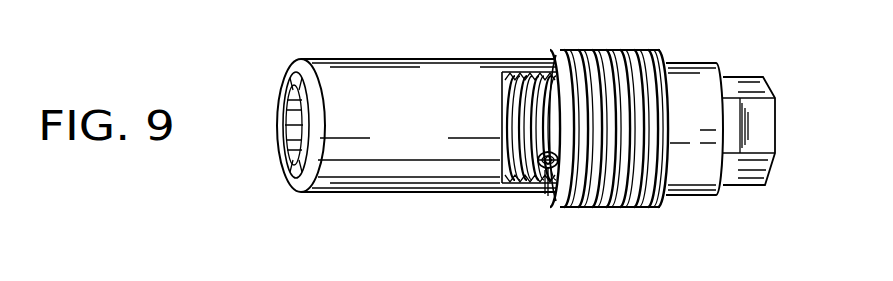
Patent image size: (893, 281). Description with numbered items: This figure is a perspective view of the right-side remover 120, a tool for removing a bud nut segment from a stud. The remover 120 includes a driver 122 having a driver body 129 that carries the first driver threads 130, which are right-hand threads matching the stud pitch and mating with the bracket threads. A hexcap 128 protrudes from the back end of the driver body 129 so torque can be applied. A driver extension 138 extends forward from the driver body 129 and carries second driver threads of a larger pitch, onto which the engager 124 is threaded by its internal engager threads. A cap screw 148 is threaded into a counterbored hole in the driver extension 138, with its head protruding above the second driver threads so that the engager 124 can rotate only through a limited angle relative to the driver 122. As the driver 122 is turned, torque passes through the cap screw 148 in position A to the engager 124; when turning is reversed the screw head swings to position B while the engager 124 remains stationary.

The right-side remover 120 is at (590, 40).
The driver 122 is at (657, 55).
The engager 124 is at (357, 78).
The hexcap 128 is at (760, 85).
The driver body 129 is at (670, 192).
The first driver threads 130 is at (596, 190).
The driver extension 138 is at (525, 64).
The cap screw 148 is at (547, 200).